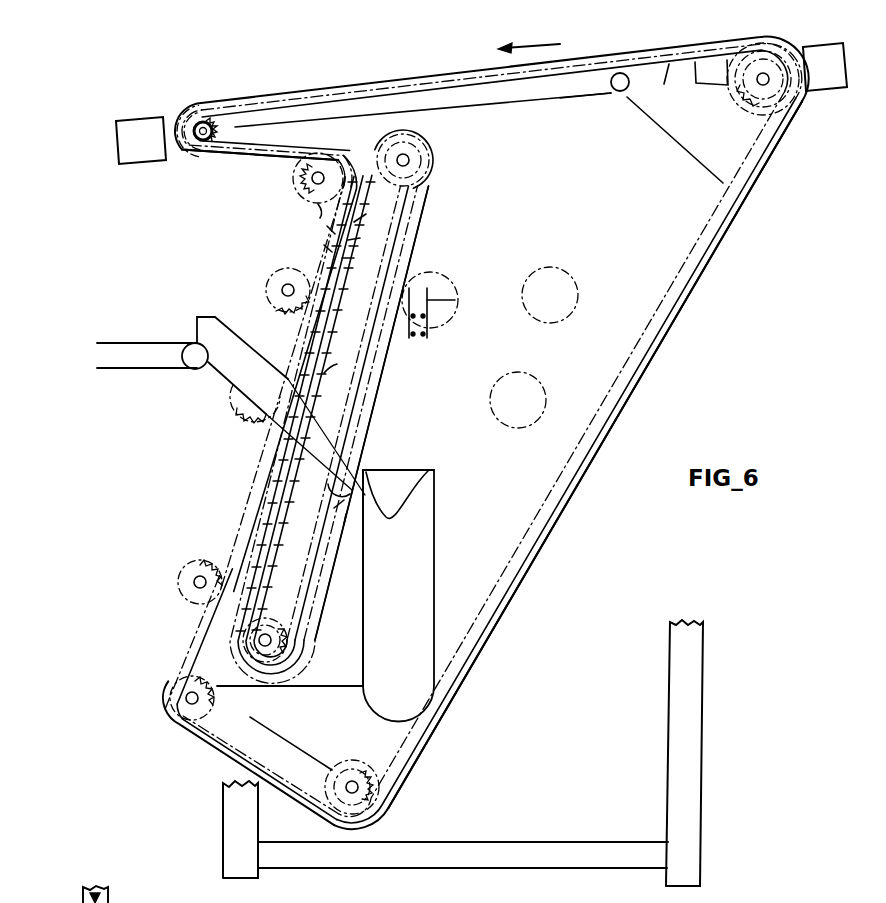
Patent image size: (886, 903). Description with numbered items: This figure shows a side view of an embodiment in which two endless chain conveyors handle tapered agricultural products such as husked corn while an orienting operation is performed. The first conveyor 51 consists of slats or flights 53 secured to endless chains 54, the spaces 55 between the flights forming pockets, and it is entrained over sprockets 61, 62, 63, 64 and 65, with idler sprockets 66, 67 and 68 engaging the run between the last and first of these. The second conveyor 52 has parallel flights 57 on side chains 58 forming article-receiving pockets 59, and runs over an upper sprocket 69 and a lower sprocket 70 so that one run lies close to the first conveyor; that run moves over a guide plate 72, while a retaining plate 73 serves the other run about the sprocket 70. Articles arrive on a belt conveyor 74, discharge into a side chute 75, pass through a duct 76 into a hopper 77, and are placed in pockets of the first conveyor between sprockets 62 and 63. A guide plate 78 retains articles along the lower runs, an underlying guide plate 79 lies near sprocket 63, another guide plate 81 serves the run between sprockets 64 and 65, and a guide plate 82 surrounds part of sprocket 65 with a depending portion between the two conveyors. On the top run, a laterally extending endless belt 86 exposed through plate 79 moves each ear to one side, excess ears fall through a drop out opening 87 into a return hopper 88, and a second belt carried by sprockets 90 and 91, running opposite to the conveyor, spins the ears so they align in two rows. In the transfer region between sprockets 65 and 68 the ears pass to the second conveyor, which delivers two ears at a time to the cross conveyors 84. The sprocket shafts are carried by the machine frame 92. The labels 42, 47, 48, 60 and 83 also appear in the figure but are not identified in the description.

The link 42 is at (276, 518).
The hook 47 is at (283, 490).
The link 48 is at (278, 541).
The first conveyor 51 is at (402, 80).
The second conveyor 52 is at (421, 240).
The slats or flights 53 is at (328, 246).
The endless chains 54 is at (332, 230).
The spaces between the flights 55 is at (322, 212).
The parallel flights 57 is at (364, 222).
The side chains 58 is at (358, 240).
The article-receiving pockets 59 is at (352, 260).
The sprocket 60 is at (276, 628).
The sprocket 61 is at (221, 699).
The sprocket 62 is at (368, 766).
The sprocket 63 is at (752, 103).
The sprocket 64 is at (217, 126).
The sprocket 65 is at (300, 182).
The idler sprocket 66 is at (272, 306).
The idler sprocket 67 is at (252, 418).
The idler sprocket 68 is at (181, 594).
The sprocket 69 is at (770, 62).
The sprocket 70 is at (290, 634).
The guide plate 72 is at (346, 357).
The retaining plate 73 is at (376, 436).
The belt conveyor 74 is at (150, 374).
The side chute 75 is at (223, 378).
The duct 76 is at (436, 557).
The hopper 77 is at (348, 692).
The guide plate 78 is at (582, 484).
The underlying guide plate 79 is at (665, 84).
The guide plate 81 is at (237, 161).
The guide plate 82 is at (346, 165).
The holder 83 is at (420, 284).
The cross conveyors 84 is at (459, 303).
The laterally extending endless belt 86 is at (704, 85).
The drop out opening 87 is at (624, 55).
The return hopper 88 is at (706, 165).
The sprocket 90 is at (620, 72).
The sprocket 91 is at (207, 122).
The machine frame 92 is at (529, 841).